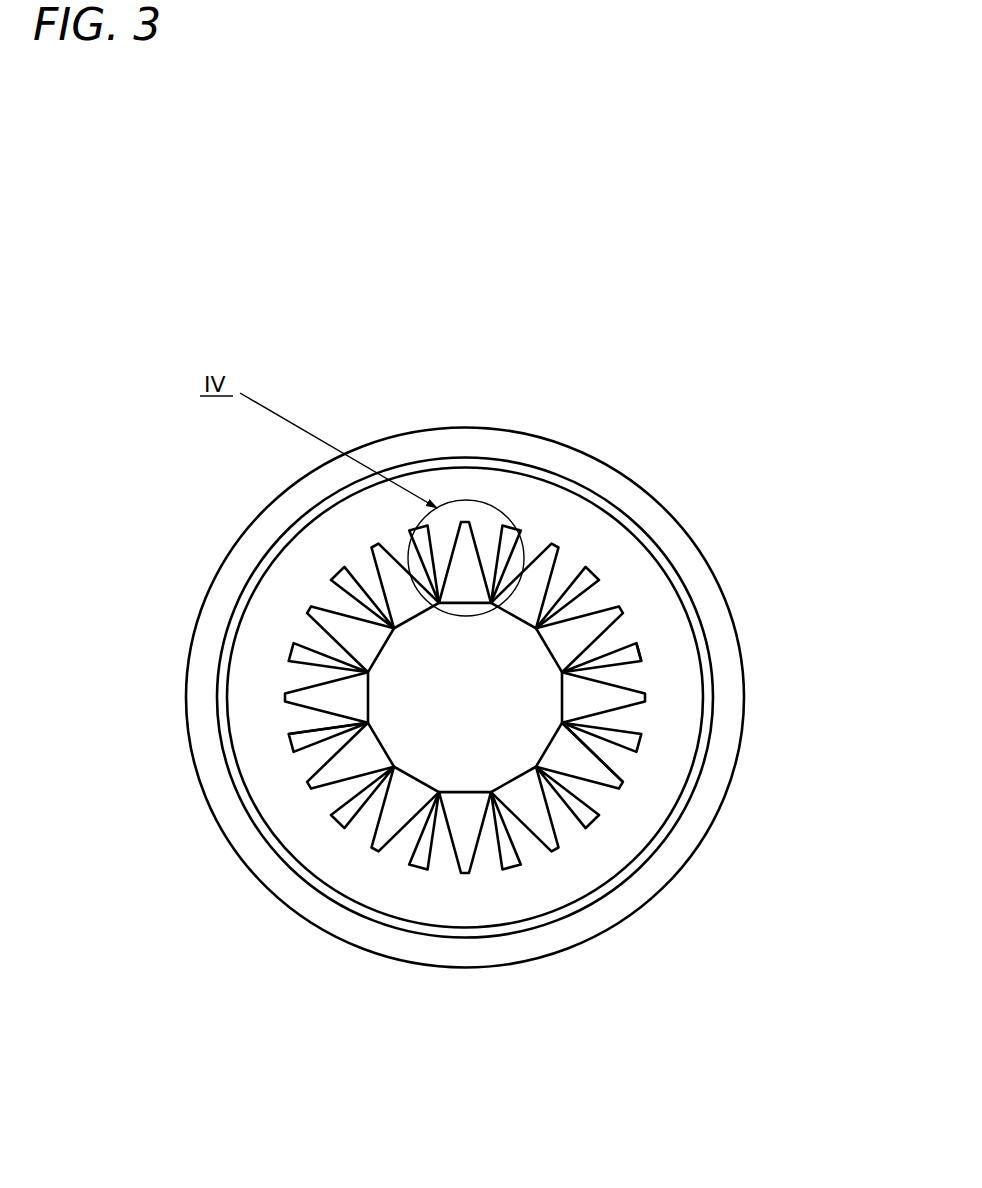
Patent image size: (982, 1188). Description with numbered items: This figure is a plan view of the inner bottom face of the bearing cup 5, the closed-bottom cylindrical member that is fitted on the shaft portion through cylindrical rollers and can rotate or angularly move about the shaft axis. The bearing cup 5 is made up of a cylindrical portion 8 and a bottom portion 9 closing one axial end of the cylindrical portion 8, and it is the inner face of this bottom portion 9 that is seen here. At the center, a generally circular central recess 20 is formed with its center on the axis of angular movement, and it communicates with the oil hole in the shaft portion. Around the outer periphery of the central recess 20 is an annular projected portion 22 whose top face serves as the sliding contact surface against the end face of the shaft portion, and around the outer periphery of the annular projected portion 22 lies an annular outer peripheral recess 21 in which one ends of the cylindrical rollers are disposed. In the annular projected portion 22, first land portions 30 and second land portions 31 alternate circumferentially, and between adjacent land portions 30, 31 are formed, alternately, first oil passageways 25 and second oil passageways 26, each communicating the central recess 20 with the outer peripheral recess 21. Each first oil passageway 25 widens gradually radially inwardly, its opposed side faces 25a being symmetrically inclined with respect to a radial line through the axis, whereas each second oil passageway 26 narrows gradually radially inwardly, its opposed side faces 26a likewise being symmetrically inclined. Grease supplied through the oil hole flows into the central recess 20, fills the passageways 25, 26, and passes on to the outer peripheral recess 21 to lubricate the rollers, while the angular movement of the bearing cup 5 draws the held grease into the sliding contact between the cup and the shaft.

The bearing cup 5 is at (720, 525).
The cylindrical portion 8 is at (595, 475).
The bottom portion 9 is at (615, 552).
The central recess 20 is at (480, 709).
The outer peripheral recess 21 is at (632, 823).
The annular projected portion 22 is at (650, 670).
The first oil passageway 25 is at (466, 524).
The side faces of the first oil passageway 25a is at (556, 772).
The second oil passageway 26 is at (509, 526).
The side faces of the second oil passageway 26a is at (320, 732).
The first land portion 30 is at (485, 532).
The second land portion 31 is at (445, 532).